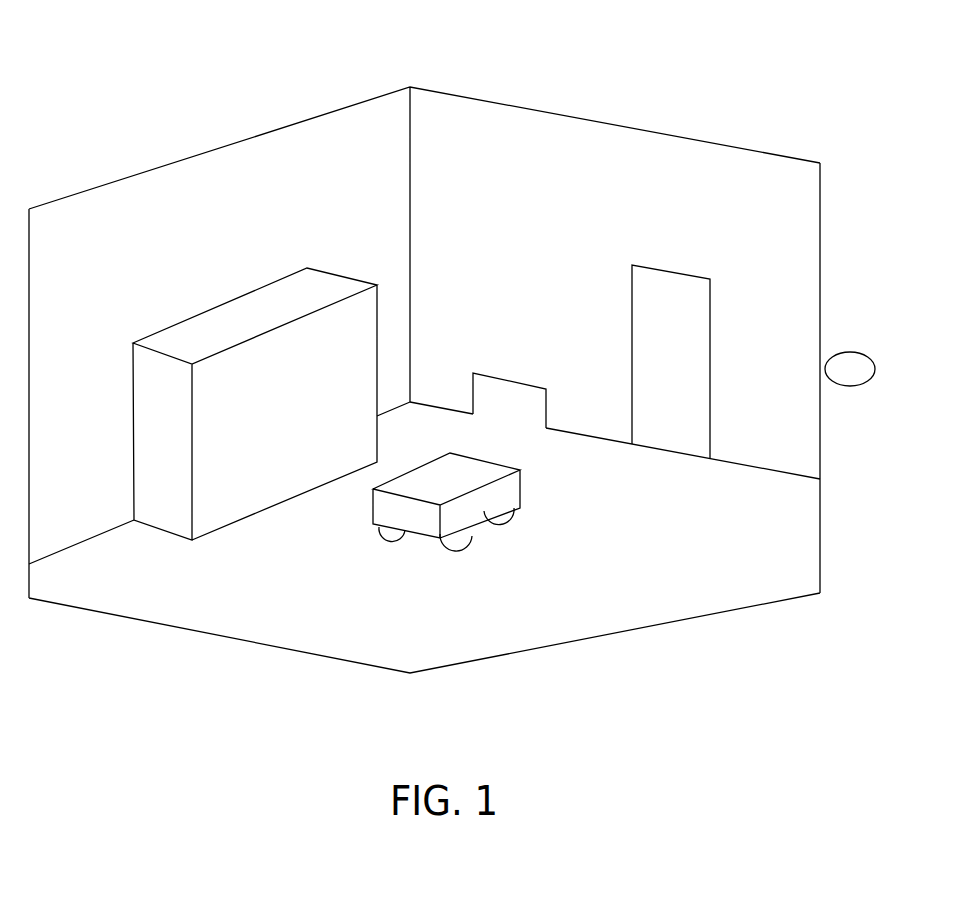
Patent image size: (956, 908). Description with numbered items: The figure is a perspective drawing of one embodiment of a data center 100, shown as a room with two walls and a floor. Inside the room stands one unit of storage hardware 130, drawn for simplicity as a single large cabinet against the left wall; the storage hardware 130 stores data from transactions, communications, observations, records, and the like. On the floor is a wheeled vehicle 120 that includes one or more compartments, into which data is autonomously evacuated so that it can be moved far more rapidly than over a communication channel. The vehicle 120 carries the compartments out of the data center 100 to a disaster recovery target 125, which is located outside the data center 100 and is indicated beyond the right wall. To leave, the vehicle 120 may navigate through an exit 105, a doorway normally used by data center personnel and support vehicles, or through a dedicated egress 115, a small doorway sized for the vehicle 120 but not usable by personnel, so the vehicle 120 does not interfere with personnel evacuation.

The data center 100 is at (140, 66).
The exit 105 is at (631, 364).
The dedicated egress 115 is at (523, 383).
The vehicle 120 is at (427, 489).
The disaster recovery target 125 is at (860, 372).
The storage hardware 130 is at (134, 462).